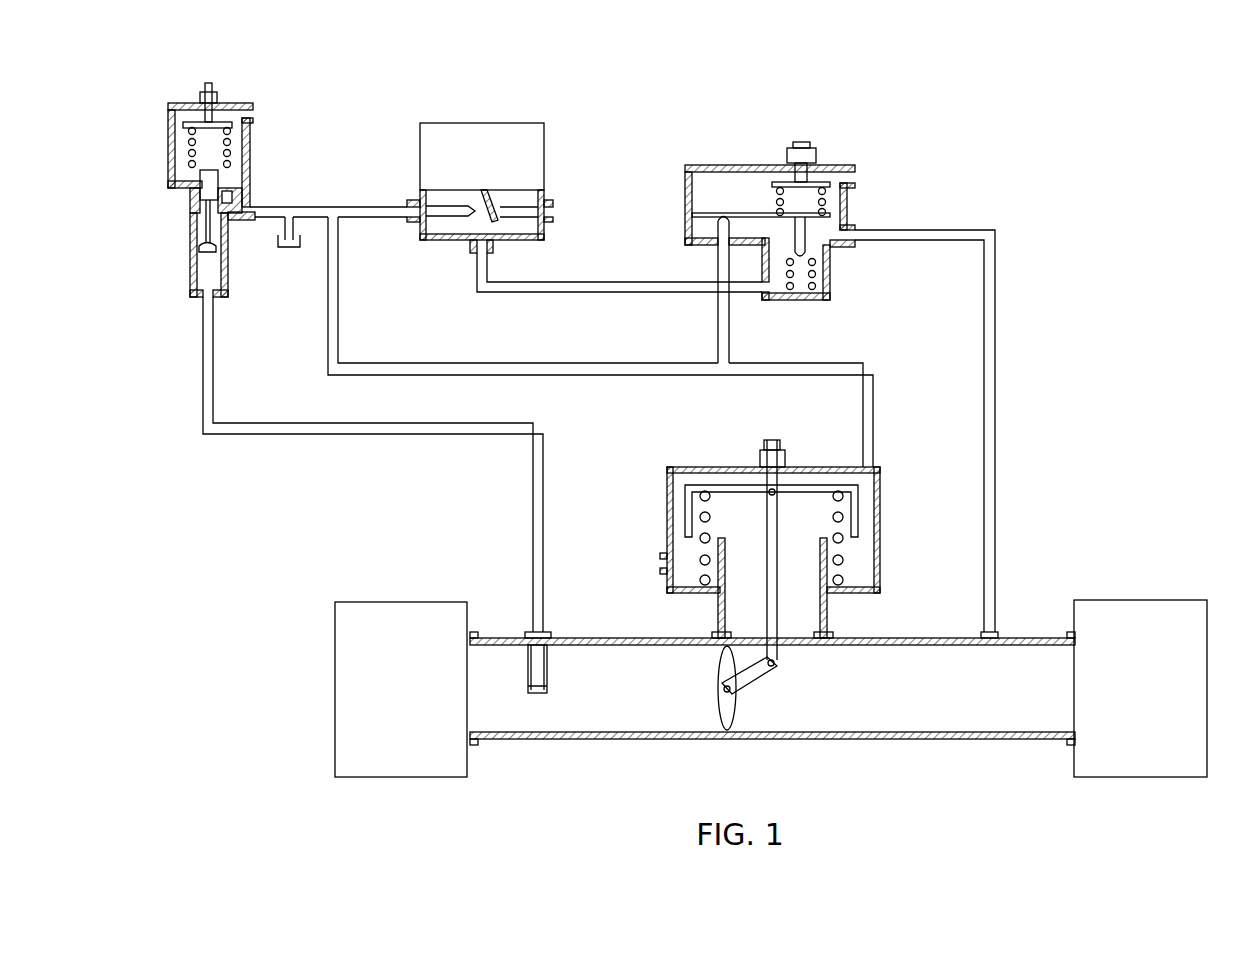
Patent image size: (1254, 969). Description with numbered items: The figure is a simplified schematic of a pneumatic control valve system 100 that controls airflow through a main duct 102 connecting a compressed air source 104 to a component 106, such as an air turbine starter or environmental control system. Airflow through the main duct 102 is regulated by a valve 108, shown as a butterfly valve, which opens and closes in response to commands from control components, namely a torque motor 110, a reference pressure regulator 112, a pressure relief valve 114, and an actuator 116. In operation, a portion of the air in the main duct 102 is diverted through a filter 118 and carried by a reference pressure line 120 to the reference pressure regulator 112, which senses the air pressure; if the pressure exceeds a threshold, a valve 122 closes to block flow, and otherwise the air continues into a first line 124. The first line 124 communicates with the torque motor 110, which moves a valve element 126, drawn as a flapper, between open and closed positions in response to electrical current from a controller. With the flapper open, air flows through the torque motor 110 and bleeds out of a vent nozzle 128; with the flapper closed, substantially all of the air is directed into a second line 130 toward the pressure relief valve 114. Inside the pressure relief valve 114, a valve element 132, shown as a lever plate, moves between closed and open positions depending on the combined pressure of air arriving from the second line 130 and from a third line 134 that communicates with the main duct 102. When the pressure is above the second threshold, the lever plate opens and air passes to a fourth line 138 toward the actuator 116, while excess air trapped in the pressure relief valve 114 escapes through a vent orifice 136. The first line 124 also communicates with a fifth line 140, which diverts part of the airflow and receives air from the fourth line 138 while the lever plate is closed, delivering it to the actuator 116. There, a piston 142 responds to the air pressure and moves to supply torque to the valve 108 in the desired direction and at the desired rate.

The pneumatic control valve system 100 is at (1056, 150).
The main duct 102 is at (622, 739).
The compressed air source 104 is at (335, 679).
The component 106 is at (1138, 600).
The valve 108 is at (737, 700).
The torque motor 110 is at (478, 123).
The reference pressure regulator 112 is at (240, 103).
The pressure relief valve 114 is at (755, 165).
The actuator 116 is at (667, 487).
The filter 118 is at (548, 665).
The reference pressure line 120 is at (351, 434).
The valve 122 is at (205, 262).
The first line 124 is at (315, 207).
The valve element 126 is at (500, 200).
The vent nozzle 128 is at (549, 224).
The second line 130 is at (519, 292).
The valve element 132 is at (718, 213).
The third line 134 is at (925, 230).
The vent orifice 136 is at (856, 170).
The fourth line 138 is at (730, 336).
The fifth line 140 is at (338, 306).
The piston 142 is at (718, 485).